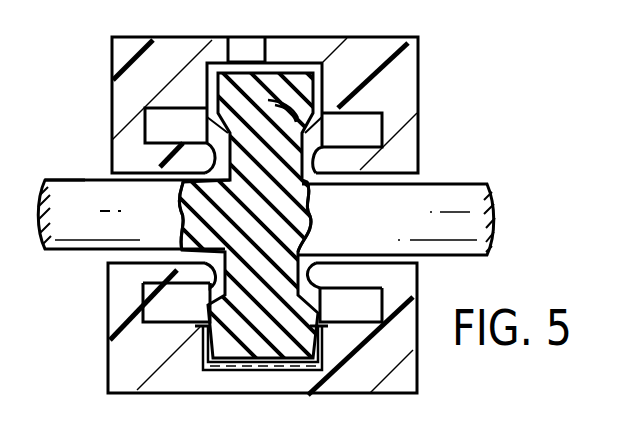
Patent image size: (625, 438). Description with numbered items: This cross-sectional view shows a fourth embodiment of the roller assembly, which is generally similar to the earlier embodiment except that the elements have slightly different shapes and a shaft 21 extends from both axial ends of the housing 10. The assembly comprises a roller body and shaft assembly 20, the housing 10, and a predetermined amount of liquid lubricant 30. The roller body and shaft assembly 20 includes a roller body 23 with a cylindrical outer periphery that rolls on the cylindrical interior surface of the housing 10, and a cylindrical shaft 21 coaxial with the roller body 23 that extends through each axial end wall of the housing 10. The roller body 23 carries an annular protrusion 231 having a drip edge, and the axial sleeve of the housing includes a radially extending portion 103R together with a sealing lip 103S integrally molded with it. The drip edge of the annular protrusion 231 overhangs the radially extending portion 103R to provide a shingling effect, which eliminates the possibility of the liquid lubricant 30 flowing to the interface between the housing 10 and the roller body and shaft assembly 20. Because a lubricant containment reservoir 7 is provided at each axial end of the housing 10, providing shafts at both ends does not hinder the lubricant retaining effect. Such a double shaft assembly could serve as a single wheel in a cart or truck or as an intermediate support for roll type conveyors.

The housing 10 is at (118, 296).
The roller body and shaft assembly 20 is at (85, 179).
The shaft 21 is at (98, 228).
The roller body 23 is at (312, 219).
The annular protrusion 231 is at (224, 100).
The lubricant containment reservoir 7 is at (366, 146).
The radially extending portion 103R is at (176, 126).
The sealing lip 103S is at (303, 247).
The liquid lubricant 30 is at (318, 364).